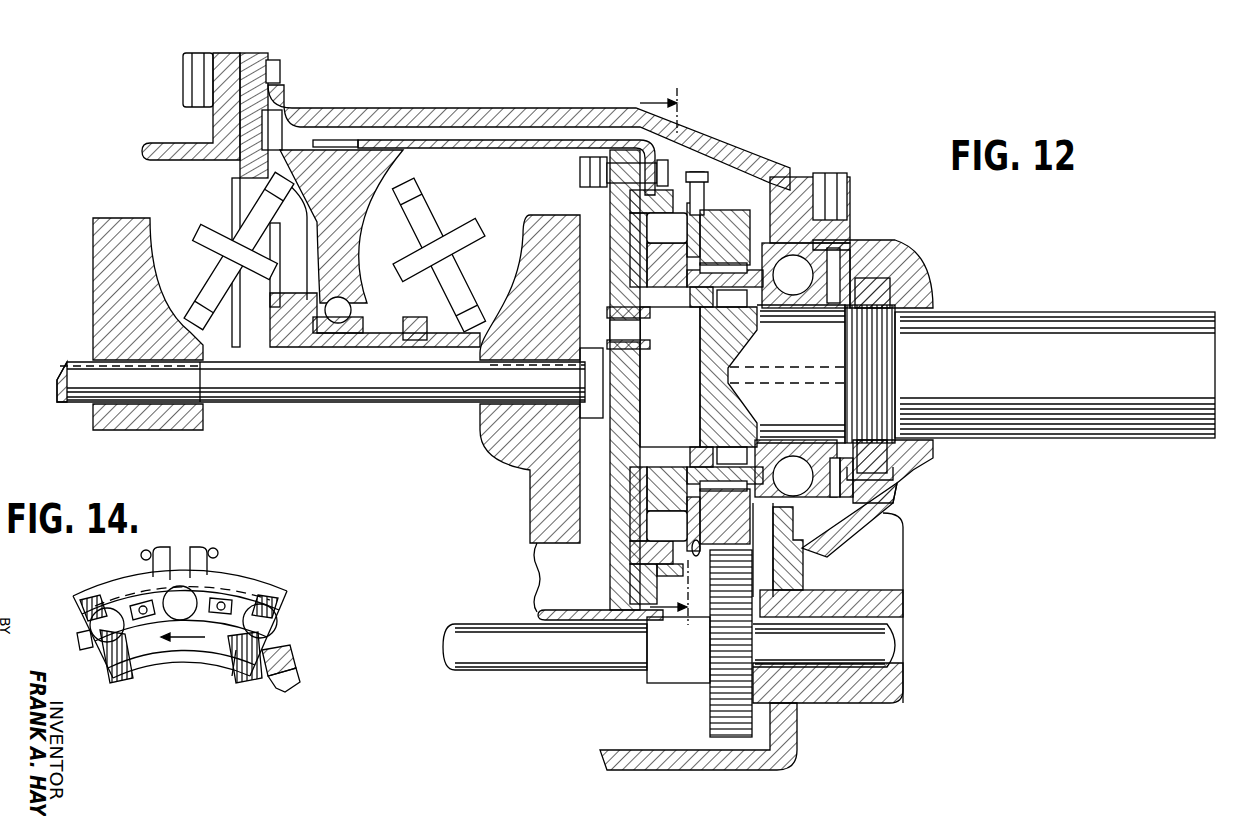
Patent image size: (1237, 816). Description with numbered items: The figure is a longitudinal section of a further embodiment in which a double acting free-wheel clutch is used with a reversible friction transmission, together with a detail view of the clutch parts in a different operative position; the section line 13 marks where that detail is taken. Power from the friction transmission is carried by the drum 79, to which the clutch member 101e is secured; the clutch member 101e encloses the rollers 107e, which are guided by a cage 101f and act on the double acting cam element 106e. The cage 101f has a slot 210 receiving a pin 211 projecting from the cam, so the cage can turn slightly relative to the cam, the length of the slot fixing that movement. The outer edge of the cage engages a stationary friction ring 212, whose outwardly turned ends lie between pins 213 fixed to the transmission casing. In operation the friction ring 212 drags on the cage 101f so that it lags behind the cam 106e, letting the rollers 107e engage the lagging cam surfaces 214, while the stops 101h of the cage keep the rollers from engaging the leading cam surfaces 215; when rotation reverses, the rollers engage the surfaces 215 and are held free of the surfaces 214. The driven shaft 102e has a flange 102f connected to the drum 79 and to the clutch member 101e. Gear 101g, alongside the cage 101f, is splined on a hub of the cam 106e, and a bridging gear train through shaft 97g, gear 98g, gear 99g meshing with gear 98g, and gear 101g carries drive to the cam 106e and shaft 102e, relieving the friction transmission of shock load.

In FIG. 12, the drum 79 is at (546, 140).
In FIG. 12, the clutch member 101e is at (638, 112).
In FIG. 12, the section line 13- 13 is at (676, 356).
In FIG. 12, the pins 213 is at (703, 168).
In FIG. 14, the pins 213 is at (141, 556).
In FIG. 12, the friction ring 212 is at (722, 192).
In FIG. 14, the friction ring 212 is at (266, 580).
In FIG. 12, the cage 101f is at (745, 186).
In FIG. 12, the gear 101g is at (815, 178).
In FIG. 12, the rollers 107e is at (610, 219).
In FIG. 14, the rollers 107e is at (277, 622).
In FIG. 12, the driven shaft 102e is at (1048, 330).
In FIG. 12, the cam element 106e is at (607, 520).
In FIG. 14, the cam element 106e is at (186, 652).
In FIG. 12, the flange 102f is at (612, 588).
In FIG. 12, the gear 99g is at (722, 540).
In FIG. 12, the shaft 97g is at (563, 668).
In FIG. 12, the gear 98g is at (738, 695).
In FIG. 14, the stops 101h is at (232, 600).
In FIG. 14, the pin 211 is at (297, 656).
In FIG. 14, the slot 210 is at (287, 670).
In FIG. 14, the leading cam surfaces 215 is at (233, 655).
In FIG. 14, the lagging cam surfaces 214 is at (128, 662).